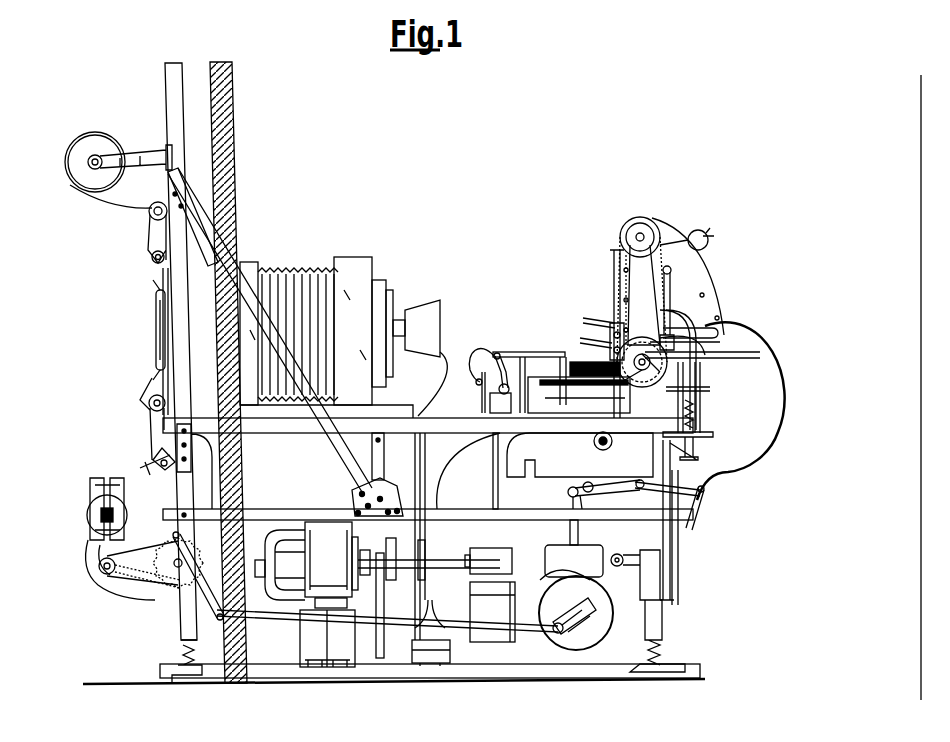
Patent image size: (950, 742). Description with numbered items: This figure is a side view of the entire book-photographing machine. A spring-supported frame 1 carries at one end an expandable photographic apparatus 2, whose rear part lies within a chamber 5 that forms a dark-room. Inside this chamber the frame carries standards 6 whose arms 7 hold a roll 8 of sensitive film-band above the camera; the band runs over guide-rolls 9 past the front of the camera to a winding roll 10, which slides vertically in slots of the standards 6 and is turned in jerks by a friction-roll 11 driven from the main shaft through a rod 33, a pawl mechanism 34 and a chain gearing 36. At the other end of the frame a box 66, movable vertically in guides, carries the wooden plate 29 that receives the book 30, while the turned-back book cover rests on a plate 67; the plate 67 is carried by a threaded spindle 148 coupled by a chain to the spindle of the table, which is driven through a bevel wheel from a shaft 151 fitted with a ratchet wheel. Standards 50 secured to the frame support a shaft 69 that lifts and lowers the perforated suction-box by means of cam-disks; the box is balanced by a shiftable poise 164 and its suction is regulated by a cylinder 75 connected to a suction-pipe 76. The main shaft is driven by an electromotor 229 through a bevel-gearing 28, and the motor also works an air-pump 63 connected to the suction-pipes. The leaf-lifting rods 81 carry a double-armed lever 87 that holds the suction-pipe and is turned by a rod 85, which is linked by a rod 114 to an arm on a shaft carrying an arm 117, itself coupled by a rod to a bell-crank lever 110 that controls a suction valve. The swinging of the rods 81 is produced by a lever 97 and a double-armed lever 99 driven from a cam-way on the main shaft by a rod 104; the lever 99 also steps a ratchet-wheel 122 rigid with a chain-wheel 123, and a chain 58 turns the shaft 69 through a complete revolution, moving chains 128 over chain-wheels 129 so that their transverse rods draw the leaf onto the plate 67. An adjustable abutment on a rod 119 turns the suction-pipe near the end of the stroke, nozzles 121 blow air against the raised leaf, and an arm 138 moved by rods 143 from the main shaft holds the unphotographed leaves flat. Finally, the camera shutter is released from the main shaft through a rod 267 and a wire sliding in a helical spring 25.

The frame 1 is at (198, 440).
The photographic apparatus 2 is at (285, 272).
The chamber 5 is at (218, 82).
The standards 6 is at (175, 74).
The arms 7 is at (103, 178).
The roll 8 is at (70, 163).
The guide-rolls 9 is at (150, 215).
The roll 10 is at (88, 516).
The friction-roll 11 is at (90, 560).
The helical spring 25 is at (438, 380).
The bevel-gearing 28 is at (505, 565).
The wooden plate 29 is at (600, 436).
The book 30 is at (568, 352).
The rod 33 is at (255, 624).
The pawl mechanism 34 is at (170, 588).
The chain gearing 36 is at (128, 573).
The standards 50 is at (672, 290).
The chain 58 is at (622, 276).
The air-pump 63 is at (412, 666).
The box 66 is at (472, 442).
The plate 67 is at (755, 358).
The shaft 69 is at (655, 238).
The cylinder 75 is at (720, 290).
The suction-pipe 76 is at (766, 452).
The rods 81 is at (578, 340).
The rod 85 is at (582, 320).
The double-armed lever 87 is at (612, 326).
The lever 97 is at (705, 482).
The lever 99 is at (670, 520).
The rod 104 is at (568, 495).
The bell-crank lever 110 is at (672, 598).
The rod 114 is at (690, 494).
The arm 117 is at (672, 580).
The rod 119 is at (612, 260).
The nozzles 121 is at (504, 352).
The ratchet-wheel 122 is at (725, 345).
The chain-wheel 123 is at (698, 328).
The chains 128 is at (680, 305).
The chain-wheels 129 is at (648, 230).
The arm 138 is at (481, 392).
The rods 143 is at (493, 488).
The spindle 148 is at (702, 412).
The shaft 151 is at (596, 446).
The poise 164 is at (704, 240).
The electromotor 229 is at (340, 540).
The rod 267 is at (291, 342).